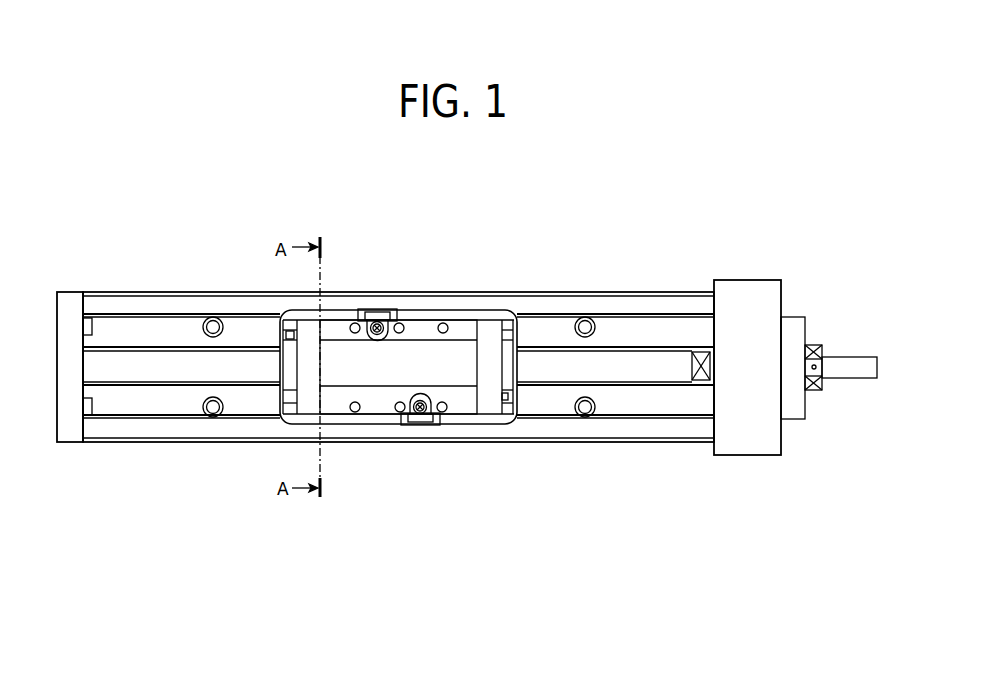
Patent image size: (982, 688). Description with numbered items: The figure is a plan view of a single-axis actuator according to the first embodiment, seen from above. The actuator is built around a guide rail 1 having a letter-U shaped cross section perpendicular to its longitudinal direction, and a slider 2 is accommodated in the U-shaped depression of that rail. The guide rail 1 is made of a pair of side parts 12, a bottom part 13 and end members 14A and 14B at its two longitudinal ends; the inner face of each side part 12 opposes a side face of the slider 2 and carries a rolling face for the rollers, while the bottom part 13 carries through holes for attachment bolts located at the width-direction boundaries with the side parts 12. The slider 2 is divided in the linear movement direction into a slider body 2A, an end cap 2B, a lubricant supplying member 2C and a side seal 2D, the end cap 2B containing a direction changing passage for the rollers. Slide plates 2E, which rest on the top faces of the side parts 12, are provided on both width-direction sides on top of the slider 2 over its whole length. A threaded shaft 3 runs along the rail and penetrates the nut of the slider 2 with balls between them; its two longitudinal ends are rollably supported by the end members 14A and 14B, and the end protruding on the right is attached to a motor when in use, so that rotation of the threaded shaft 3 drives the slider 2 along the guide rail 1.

The guide rail 1 is at (160, 441).
The slider 2 is at (380, 367).
The slider body 2A is at (376, 405).
The end cap 2B is at (306, 393).
The lubricant supplying member 2C is at (291, 320).
The side seal 2D is at (284, 318).
The slide plate 2E is at (342, 316).
The threaded shaft 3 is at (648, 365).
The side part 12 is at (684, 305).
The bottom part 13 is at (553, 410).
The end member 14A is at (70, 443).
The end member 14B is at (750, 448).